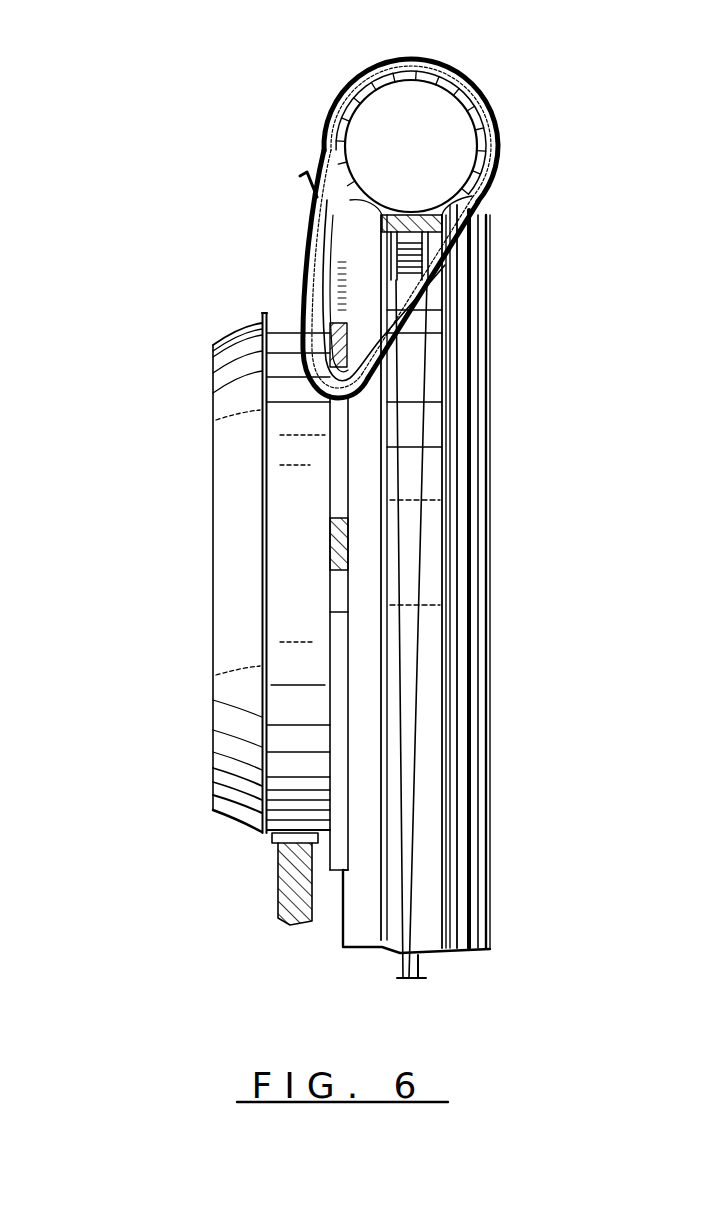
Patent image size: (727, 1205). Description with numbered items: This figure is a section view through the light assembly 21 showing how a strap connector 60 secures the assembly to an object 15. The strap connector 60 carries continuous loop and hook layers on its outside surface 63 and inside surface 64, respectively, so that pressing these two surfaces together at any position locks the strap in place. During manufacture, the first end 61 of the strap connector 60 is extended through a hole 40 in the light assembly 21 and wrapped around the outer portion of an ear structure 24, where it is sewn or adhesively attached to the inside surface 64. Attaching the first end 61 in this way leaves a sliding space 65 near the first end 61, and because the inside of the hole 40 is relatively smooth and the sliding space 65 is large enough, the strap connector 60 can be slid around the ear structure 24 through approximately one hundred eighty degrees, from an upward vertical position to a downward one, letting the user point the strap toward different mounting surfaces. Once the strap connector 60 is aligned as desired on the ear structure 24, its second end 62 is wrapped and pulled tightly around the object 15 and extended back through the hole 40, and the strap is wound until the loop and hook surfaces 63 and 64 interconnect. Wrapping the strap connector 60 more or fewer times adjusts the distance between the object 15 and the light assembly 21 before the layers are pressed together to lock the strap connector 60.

The object 15 is at (427, 159).
The light assembly 21 is at (166, 364).
The ear structure 24 is at (300, 320).
The hole 40 is at (368, 460).
The strap connector 60 is at (502, 130).
The first end 61 is at (303, 184).
The second end 62 is at (313, 208).
The outside surface 63 is at (465, 80).
The inside surface 64 is at (485, 221).
The sliding space 65 is at (316, 268).